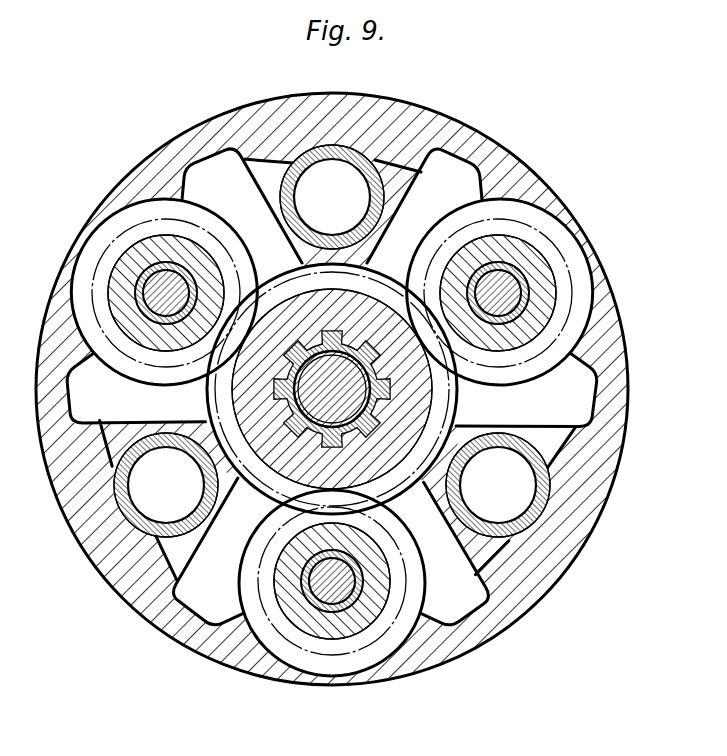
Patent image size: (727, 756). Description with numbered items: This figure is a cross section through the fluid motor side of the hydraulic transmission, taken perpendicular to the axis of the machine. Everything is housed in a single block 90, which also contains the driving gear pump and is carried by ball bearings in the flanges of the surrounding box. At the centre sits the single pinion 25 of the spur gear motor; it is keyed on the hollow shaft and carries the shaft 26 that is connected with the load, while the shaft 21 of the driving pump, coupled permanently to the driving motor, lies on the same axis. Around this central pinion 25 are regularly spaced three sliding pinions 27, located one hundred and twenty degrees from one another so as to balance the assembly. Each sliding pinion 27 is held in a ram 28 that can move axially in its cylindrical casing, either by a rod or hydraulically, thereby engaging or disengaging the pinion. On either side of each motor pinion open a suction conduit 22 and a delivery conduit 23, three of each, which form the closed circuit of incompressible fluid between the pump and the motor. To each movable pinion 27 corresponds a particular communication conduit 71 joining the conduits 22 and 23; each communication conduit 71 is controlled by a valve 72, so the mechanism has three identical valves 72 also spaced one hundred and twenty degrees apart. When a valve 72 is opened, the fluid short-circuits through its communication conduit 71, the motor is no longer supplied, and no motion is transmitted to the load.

The block 90 is at (128, 588).
The communication conduit 71 is at (277, 203).
The suction conduit 22 is at (215, 190).
The delivery conduit 23 is at (448, 197).
The valve 72 is at (320, 206).
The sliding pinion 27 is at (135, 240).
The ram 28 is at (511, 290).
The pinion 25 is at (293, 477).
The shaft 26 is at (362, 433).
The shaft 21 is at (357, 388).